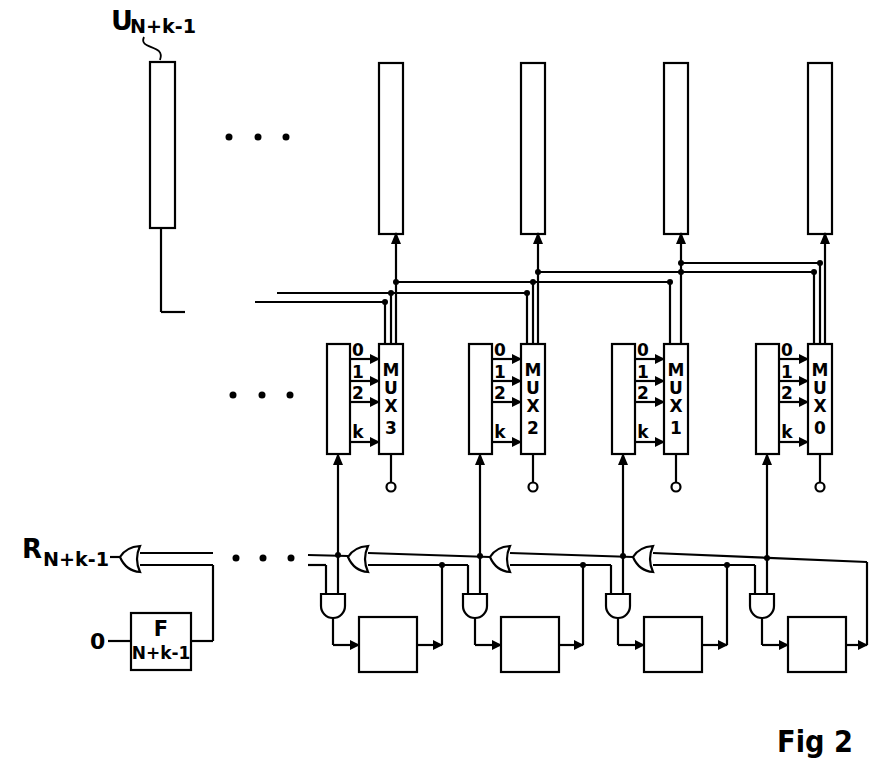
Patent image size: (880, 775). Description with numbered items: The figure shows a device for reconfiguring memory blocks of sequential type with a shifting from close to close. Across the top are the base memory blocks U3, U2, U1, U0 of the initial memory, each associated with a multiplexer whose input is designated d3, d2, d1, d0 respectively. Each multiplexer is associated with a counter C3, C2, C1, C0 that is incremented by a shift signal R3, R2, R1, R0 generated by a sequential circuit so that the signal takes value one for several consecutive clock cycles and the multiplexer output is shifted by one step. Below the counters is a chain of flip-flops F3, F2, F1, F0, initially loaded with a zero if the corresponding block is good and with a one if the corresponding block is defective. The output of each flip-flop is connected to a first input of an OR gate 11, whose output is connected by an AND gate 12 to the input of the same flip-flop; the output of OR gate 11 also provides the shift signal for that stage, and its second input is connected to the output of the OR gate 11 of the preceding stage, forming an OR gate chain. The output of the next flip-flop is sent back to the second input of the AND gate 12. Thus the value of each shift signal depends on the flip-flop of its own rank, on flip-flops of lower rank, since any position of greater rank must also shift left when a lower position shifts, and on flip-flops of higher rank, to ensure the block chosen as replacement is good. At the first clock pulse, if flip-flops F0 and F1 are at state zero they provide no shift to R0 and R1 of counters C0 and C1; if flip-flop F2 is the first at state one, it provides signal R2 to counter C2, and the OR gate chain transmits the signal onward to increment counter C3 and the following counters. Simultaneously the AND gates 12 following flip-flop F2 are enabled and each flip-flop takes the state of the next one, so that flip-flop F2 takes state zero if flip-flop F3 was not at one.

The OR gate 11 is at (534, 548).
The AND gate 12 is at (504, 599).
The memory block U3 is at (391, 148).
The memory block U2 is at (533, 148).
The memory block U1 is at (676, 148).
The memory block U0 is at (820, 148).
The counter C3 is at (327, 343).
The counter C2 is at (455, 383).
The counter C1 is at (598, 383).
The counter C0 is at (742, 383).
The shift signal R3 is at (321, 523).
The shift signal R2 is at (463, 523).
The shift signal R1 is at (606, 523).
The shift signal R0 is at (750, 523).
The multiplexer input d3 is at (391, 487).
The multiplexer input d2 is at (533, 487).
The multiplexer input d1 is at (676, 487).
The multiplexer input d0 is at (820, 487).
The flip-flop F3 is at (388, 644).
The flip-flop F2 is at (530, 644).
The flip-flop F1 is at (673, 644).
The flip-flop F0 is at (817, 644).